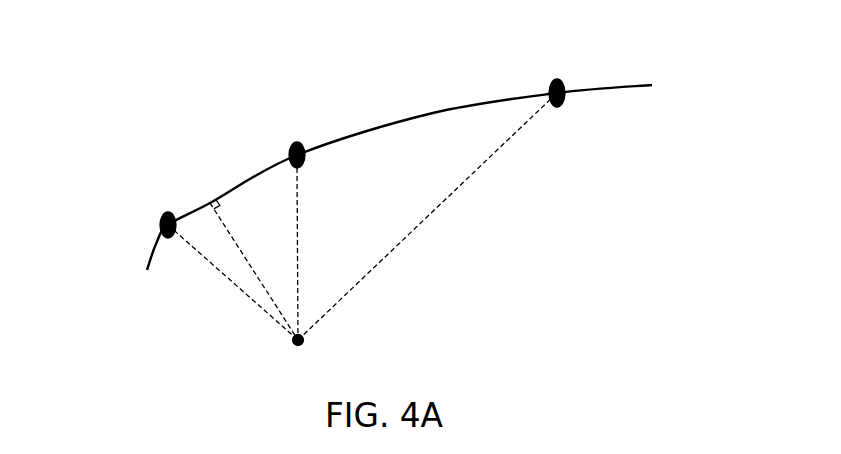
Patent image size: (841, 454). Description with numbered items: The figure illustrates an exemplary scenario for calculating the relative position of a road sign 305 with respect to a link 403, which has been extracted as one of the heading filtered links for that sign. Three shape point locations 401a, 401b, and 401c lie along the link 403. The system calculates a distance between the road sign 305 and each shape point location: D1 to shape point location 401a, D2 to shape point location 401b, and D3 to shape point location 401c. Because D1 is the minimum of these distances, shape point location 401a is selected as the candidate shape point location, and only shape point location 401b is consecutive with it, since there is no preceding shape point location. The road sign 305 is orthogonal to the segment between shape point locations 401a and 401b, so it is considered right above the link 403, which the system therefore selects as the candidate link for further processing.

The shape point location 401a is at (160, 226).
The shape point location 401b is at (295, 143).
The shape point location 401c is at (557, 80).
The link 403 is at (433, 113).
The road sign 305 is at (303, 343).
The distance D1 is at (237, 288).
The distance D2 is at (297, 218).
The distance D3 is at (452, 193).